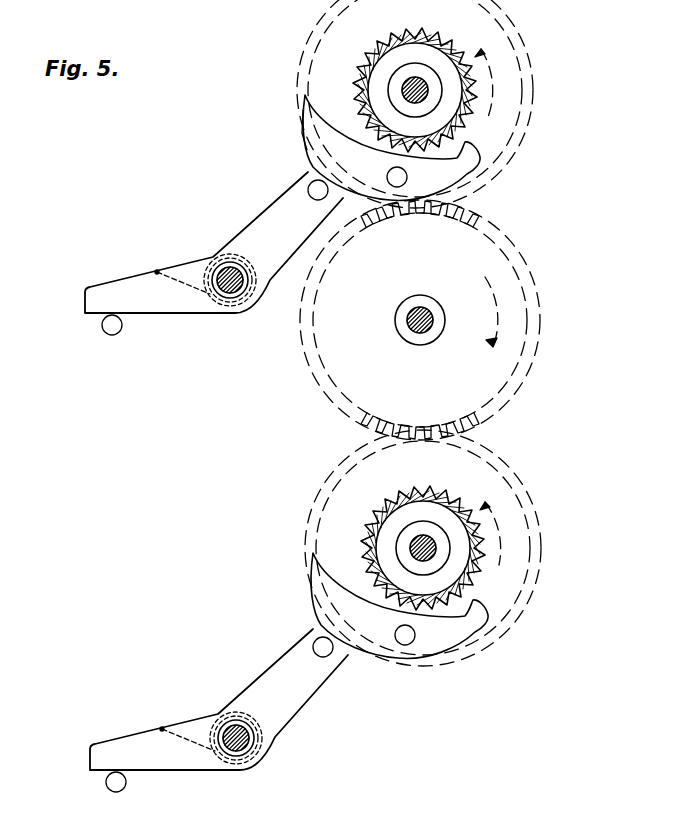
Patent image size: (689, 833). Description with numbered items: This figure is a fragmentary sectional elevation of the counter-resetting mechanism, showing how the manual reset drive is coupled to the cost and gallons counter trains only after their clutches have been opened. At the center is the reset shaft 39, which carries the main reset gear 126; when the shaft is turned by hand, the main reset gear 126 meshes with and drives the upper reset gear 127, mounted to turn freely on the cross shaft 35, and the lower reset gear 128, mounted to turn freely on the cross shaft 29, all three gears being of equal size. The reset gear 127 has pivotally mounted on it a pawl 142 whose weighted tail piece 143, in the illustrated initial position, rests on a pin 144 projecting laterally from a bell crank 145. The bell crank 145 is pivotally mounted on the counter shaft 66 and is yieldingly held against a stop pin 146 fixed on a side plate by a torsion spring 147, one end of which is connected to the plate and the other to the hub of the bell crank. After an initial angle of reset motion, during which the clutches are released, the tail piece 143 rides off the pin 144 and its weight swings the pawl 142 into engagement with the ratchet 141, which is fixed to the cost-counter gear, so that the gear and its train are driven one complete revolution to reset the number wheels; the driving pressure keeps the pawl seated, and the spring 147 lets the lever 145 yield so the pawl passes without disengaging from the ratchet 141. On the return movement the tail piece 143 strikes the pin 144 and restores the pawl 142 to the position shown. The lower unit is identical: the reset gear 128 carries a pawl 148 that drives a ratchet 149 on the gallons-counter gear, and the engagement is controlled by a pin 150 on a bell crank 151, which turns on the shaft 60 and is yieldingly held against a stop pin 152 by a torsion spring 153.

The reset gear 127 is at (528, 82).
The ratchet 141 is at (395, 33).
The cross shaft 35 is at (418, 82).
The pawl 142 is at (467, 167).
The weighted tail piece 143 is at (302, 145).
The pin 144 is at (313, 185).
The bell crank 145 is at (265, 215).
The torsion spring 147 is at (227, 252).
The cross shaft 66 is at (228, 293).
The stop pin 146 is at (112, 335).
The main reset gear 126 is at (537, 333).
The shaft 39 is at (404, 318).
The reset gear 128 is at (537, 528).
The ratchet 149 is at (475, 577).
The cross shaft 29 is at (428, 543).
The pawl 148 is at (448, 637).
The pin 150 is at (327, 653).
The bell crank 151 is at (283, 660).
The torsion spring 153 is at (224, 710).
The shaft 60 is at (253, 743).
The stop pin 152 is at (106, 782).